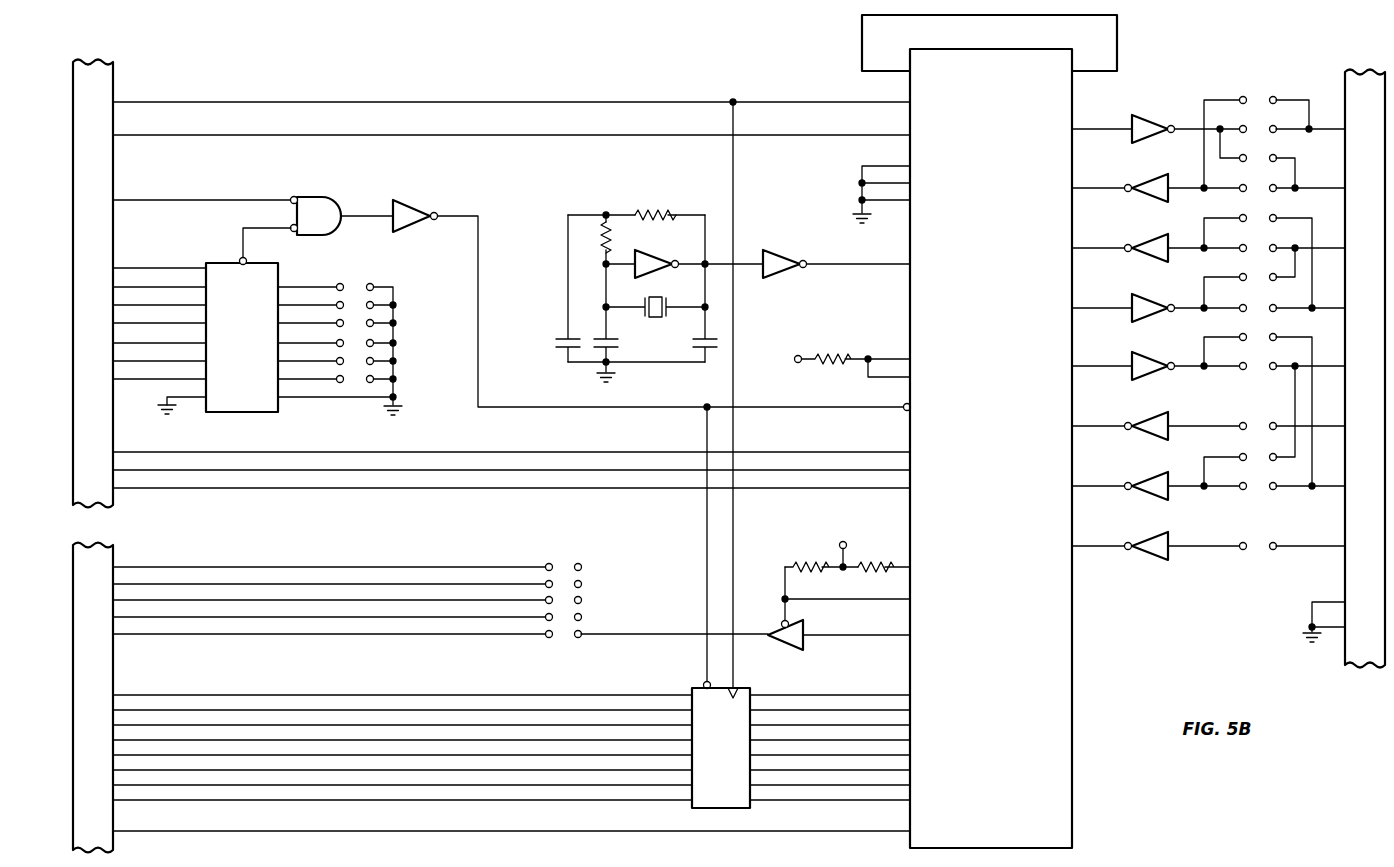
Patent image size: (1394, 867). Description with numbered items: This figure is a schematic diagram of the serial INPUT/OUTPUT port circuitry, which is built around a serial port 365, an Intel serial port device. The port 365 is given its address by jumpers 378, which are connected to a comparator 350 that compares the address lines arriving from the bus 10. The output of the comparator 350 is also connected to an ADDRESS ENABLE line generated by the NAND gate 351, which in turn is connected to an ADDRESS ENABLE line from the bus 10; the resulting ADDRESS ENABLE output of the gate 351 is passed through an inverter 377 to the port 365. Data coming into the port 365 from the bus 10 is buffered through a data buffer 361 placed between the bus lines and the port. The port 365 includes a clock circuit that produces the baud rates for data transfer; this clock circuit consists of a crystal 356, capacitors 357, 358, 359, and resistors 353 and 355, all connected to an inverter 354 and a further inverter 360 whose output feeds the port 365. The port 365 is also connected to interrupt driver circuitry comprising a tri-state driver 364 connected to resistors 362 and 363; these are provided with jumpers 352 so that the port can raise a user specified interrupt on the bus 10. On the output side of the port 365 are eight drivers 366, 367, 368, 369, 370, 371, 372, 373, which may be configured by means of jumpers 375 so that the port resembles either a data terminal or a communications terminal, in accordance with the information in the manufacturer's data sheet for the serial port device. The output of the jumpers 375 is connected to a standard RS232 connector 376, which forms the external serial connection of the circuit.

The bus 10 is at (96, 58).
The comparator 350 is at (253, 338).
The NAND gate 351 is at (317, 231).
The jumpers 352 is at (546, 562).
The resistor 353 is at (636, 205).
The inverter 354 is at (660, 250).
The resistor 355 is at (616, 239).
The crystal 356 is at (660, 295).
The capacitor 357 is at (553, 342).
The capacitor 358 is at (615, 338).
The capacitor 359 is at (708, 350).
The inverter 360 is at (788, 250).
The data buffer 361 is at (801, 570).
The resistor 362 is at (884, 555).
The resistor 363 is at (817, 554).
The tri-state driver 364 is at (808, 630).
The serial port 365 is at (985, 431).
The driver 366 is at (1140, 113).
The driver 367 is at (1155, 175).
The driver 368 is at (1168, 234).
The driver 369 is at (1143, 292).
The driver 370 is at (1143, 350).
The driver 371 is at (1160, 412).
The driver 372 is at (1168, 472).
The driver 373 is at (1168, 532).
The jumpers 375 is at (1277, 90).
The RS232 connector 376 is at (1366, 70).
The inverter 377 is at (416, 205).
The jumpers 378 is at (378, 277).